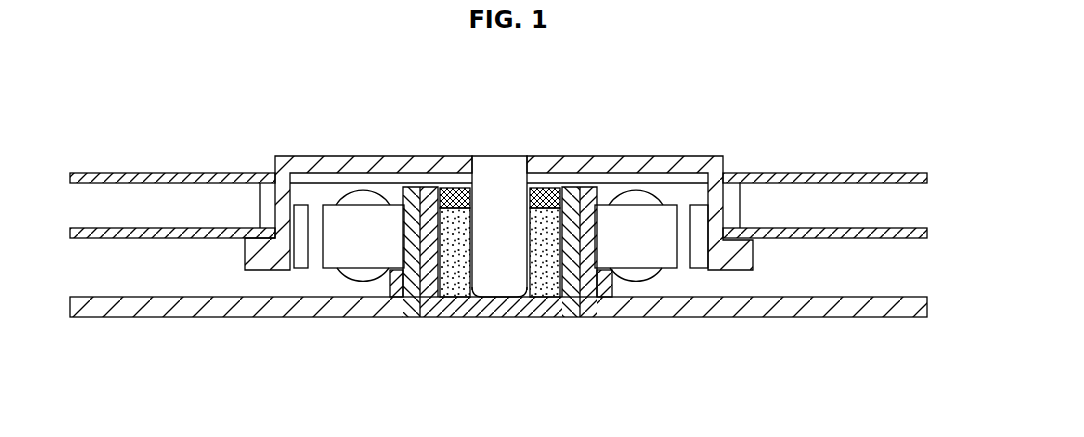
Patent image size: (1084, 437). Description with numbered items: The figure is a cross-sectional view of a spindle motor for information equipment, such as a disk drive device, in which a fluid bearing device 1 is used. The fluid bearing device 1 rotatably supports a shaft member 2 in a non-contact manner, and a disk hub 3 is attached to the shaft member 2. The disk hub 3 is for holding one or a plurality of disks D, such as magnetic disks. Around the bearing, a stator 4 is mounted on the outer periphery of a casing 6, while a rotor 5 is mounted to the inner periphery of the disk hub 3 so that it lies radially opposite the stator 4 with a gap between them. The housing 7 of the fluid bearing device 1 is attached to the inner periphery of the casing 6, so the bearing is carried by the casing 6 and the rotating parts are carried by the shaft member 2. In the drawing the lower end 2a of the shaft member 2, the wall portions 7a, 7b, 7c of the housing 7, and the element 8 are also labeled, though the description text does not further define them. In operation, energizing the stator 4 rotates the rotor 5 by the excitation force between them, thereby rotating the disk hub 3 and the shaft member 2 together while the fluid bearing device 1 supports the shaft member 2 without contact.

The fluid bearing device 1 is at (564, 184).
The shaft member 2 is at (502, 154).
The pin tip 2a is at (490, 298).
The disk hub 3 is at (702, 157).
The stator 4 is at (665, 256).
The rotor 5 is at (697, 263).
The casing 6 is at (598, 308).
The housing 7 is at (441, 319).
The yoke wall 7a is at (445, 190).
The yoke wall 7b is at (420, 243).
The yoke floor 7c is at (527, 300).
The adhesive 8 is at (549, 192).
The disk D is at (843, 172).